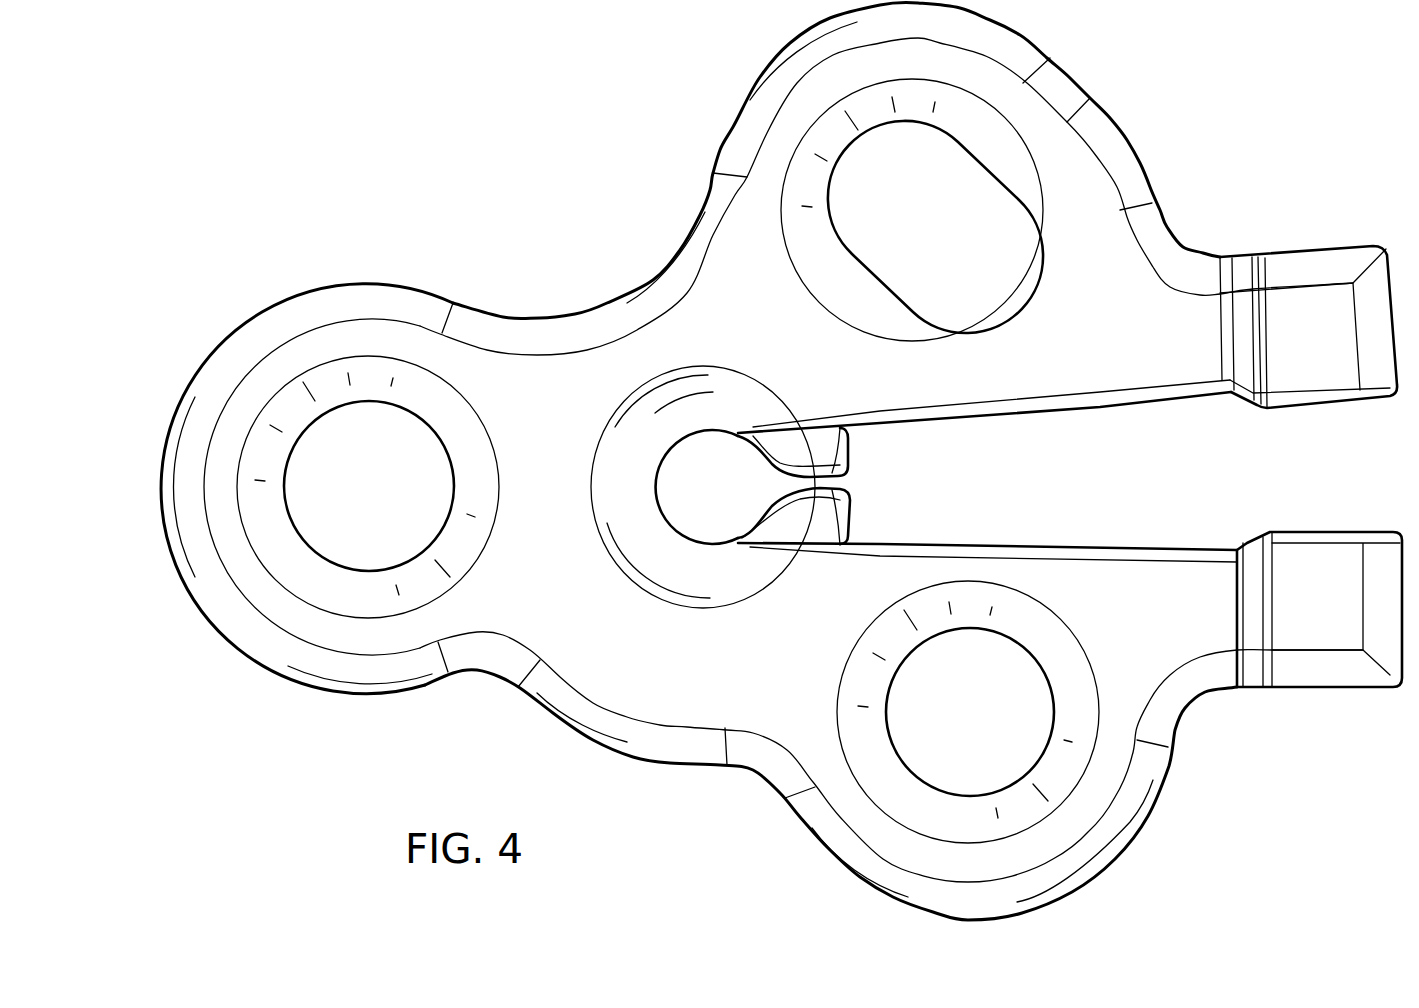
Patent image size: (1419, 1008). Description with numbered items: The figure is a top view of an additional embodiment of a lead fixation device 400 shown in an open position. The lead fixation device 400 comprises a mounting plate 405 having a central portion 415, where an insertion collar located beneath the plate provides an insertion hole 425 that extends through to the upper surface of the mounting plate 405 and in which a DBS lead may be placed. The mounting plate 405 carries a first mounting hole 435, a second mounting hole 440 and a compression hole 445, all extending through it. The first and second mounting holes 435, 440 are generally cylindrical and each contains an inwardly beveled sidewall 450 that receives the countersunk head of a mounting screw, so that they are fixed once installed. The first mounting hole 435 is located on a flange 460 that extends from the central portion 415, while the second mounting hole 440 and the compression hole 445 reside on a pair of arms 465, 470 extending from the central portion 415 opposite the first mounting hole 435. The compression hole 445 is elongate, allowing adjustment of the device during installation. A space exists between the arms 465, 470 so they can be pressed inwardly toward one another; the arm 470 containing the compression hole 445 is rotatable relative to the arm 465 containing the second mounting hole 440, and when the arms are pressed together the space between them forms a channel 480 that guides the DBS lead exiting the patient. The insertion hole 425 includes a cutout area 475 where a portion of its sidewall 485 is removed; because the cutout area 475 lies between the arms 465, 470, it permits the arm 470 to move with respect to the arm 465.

The lead fixation device 400 is at (519, 156).
The mounting plate 405 is at (587, 307).
The central portion 415 is at (680, 657).
The insertion hole 425 is at (687, 537).
The first mounting hole 435 is at (342, 567).
The second mounting hole 440 is at (1017, 778).
The compression hole 445 is at (960, 143).
The inwardly beveled sidewall 450 is at (295, 410).
The flange 460 is at (327, 287).
The arm 465 is at (1183, 633).
The arm 470 is at (1158, 300).
The cutout area 475 is at (850, 450).
The channel 480 is at (1205, 480).
The sidewall 485 is at (620, 465).